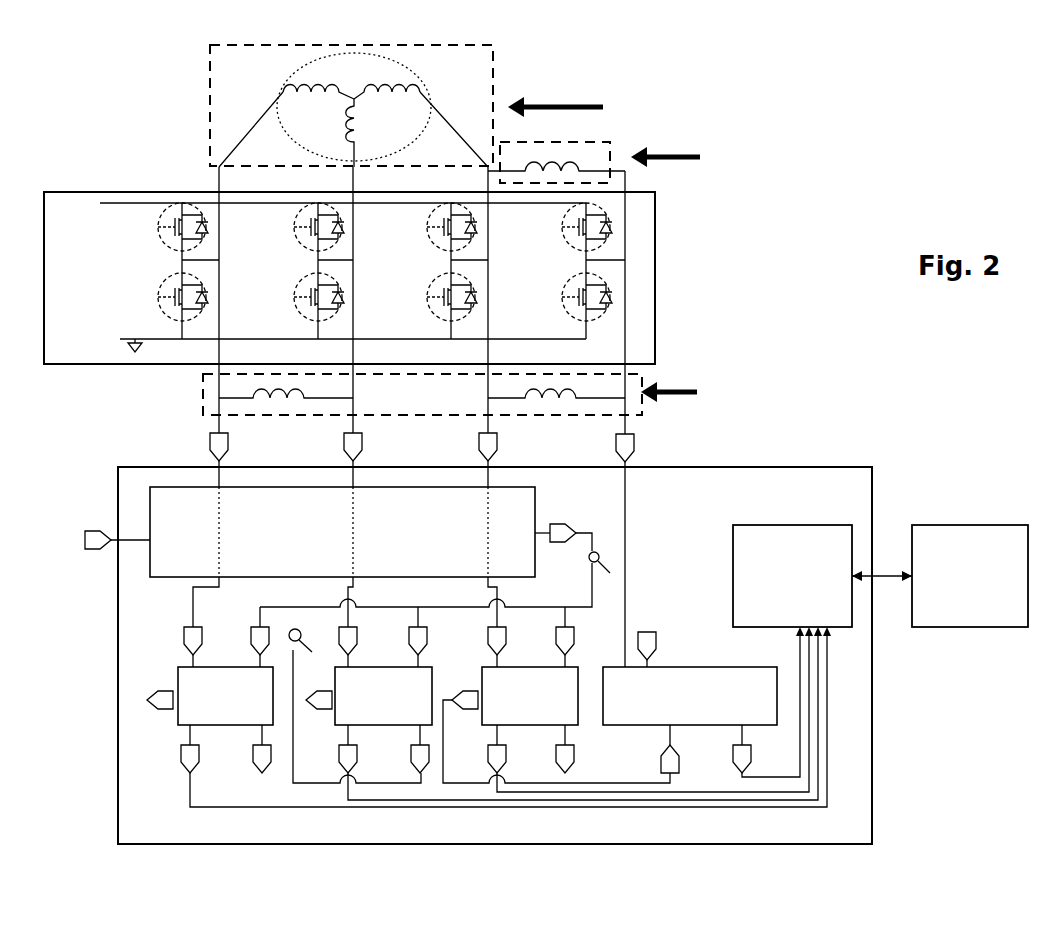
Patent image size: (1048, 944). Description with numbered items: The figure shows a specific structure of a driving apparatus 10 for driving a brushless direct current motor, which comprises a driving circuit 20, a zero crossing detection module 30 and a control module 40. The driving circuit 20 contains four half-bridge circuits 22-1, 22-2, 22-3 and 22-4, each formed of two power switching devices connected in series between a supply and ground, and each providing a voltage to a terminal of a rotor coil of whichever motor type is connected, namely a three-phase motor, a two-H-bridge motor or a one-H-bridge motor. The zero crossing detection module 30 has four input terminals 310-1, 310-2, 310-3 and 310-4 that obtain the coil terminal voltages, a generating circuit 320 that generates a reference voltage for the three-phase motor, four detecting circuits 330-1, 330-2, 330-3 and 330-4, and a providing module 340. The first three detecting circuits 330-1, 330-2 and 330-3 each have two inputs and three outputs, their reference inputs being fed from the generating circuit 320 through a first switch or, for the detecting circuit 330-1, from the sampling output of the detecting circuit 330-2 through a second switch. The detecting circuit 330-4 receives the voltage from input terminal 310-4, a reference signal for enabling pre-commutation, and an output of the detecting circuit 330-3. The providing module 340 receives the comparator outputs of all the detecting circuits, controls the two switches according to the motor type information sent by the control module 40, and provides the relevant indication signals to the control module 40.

The driving apparatus 10 is at (97, 137).
The driving circuit 20 is at (655, 275).
The half-bridge circuit 22-1 is at (182, 271).
The half-bridge circuit 22-2 is at (317, 271).
The half-bridge circuit 22-3 is at (451, 271).
The half-bridge circuit 22-4 is at (587, 271).
The zero crossing detection module 30 is at (718, 465).
The control module 40 is at (970, 576).
The input terminal 310-1 is at (203, 447).
The input terminal 310-2 is at (337, 447).
The input terminal 310-3 is at (472, 447).
The input terminal 310-4 is at (608, 448).
The generating circuit 320 is at (346, 557).
The detecting circuit 330-1 is at (480, 717).
The detecting circuit 330-2 is at (555, 713).
The detecting circuit 330-3 is at (627, 709).
The detecting circuit 330-4 is at (702, 702).
The providing module 340 is at (822, 576).